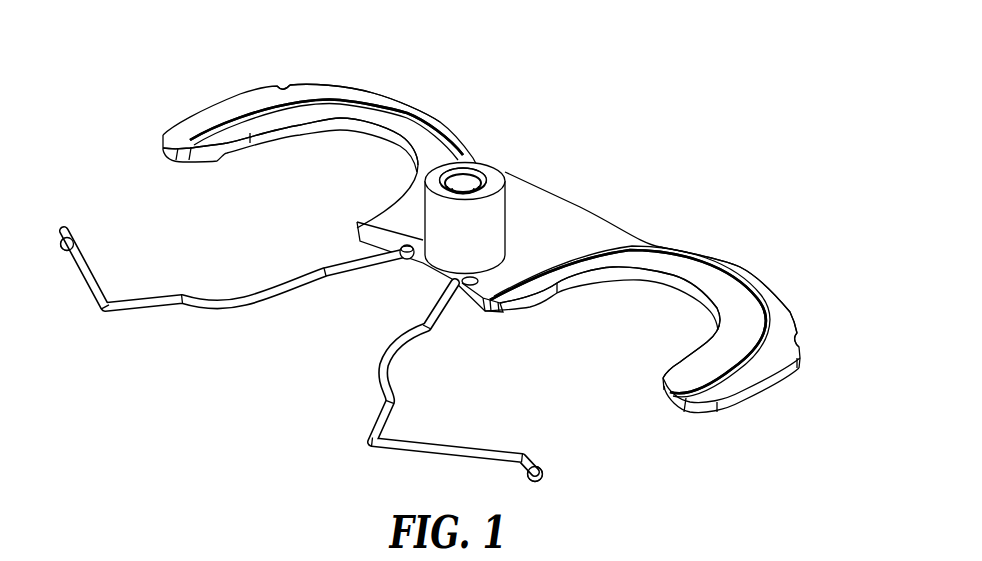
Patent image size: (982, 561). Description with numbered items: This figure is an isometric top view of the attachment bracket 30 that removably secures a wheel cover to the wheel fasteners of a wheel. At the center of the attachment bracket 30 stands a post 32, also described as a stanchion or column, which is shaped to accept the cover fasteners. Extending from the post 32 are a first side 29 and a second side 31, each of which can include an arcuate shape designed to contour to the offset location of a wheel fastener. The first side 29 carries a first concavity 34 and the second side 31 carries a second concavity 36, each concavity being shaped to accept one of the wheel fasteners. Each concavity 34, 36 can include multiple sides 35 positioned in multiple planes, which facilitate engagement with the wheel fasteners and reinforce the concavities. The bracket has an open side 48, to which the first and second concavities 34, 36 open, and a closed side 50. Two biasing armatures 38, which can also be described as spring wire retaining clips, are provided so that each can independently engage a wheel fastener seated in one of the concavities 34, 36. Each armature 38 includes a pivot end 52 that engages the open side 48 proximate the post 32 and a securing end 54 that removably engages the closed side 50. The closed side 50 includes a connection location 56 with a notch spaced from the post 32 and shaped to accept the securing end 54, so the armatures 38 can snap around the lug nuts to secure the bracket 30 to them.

The first side 29 is at (417, 89).
The attachment bracket 30 is at (626, 106).
The second side 31 is at (761, 193).
The post 32 is at (494, 227).
The first concavity 34 is at (291, 192).
The multiple sides 35 is at (193, 142).
The second concavity 36 is at (608, 344).
The biasing armature 38 is at (104, 316).
The open side 48 is at (80, 138).
The closed side 50 is at (531, 175).
The pivot end 52 is at (425, 293).
The securing end 54 is at (56, 221).
The connection location 56 is at (283, 88).